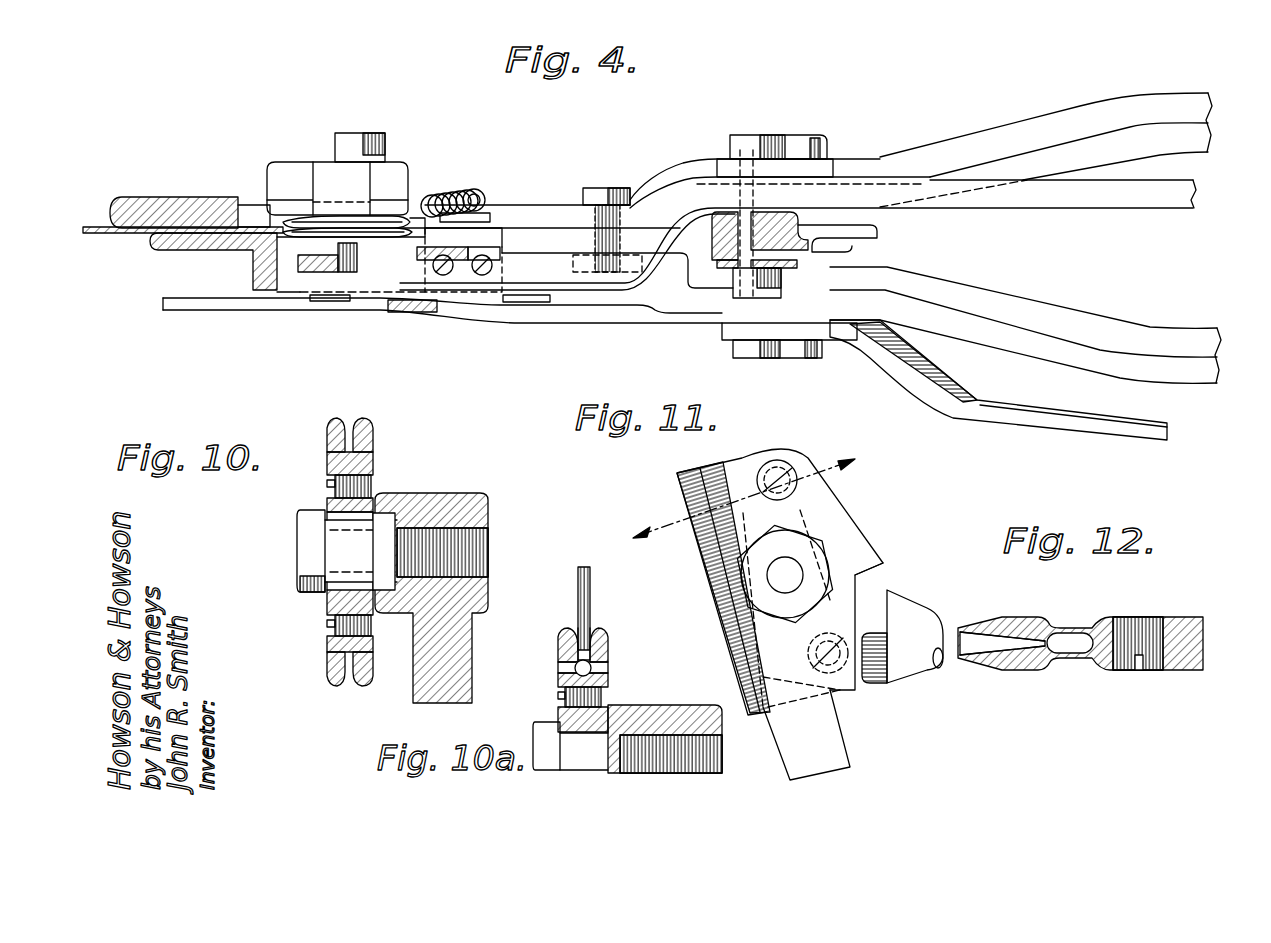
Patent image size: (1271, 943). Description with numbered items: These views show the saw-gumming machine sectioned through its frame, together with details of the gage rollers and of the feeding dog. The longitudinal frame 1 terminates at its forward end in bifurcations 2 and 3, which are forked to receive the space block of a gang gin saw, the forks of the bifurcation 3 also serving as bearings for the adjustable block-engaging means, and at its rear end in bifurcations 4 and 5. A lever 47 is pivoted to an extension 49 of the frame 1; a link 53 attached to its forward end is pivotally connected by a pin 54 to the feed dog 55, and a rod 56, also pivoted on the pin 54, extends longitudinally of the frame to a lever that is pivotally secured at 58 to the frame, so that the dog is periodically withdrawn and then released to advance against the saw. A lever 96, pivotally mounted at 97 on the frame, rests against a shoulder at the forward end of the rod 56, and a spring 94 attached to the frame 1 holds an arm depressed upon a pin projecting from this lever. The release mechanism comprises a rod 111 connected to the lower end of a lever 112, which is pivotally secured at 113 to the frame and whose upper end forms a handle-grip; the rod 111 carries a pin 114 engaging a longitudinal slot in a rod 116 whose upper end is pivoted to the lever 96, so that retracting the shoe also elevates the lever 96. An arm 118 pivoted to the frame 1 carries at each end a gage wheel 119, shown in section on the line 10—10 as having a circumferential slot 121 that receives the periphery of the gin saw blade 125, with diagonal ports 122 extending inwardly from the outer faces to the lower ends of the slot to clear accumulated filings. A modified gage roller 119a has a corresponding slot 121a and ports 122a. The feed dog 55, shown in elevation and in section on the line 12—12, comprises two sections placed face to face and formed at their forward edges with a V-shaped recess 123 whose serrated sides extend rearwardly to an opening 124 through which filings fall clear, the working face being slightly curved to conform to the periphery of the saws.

In FIG. 4, the longitudinal frame 1 is at (545, 212).
In FIG. 4, the bifurcation 2 is at (170, 197).
In FIG. 4, the bifurcation 3 is at (213, 251).
In FIG. 4, the bifurcation 4 is at (1073, 106).
In FIG. 4, the bifurcation 5 is at (1077, 364).
In FIG. 4, the section line 10— 10 is at (343, 175).
In FIG. 11, the section line 12— 12 is at (743, 501).
In FIG. 4, the lever 47 is at (572, 282).
In FIG. 4, the frame extension 49 is at (858, 240).
In FIG. 4, the link 53 is at (346, 264).
In FIG. 11, the link 53 is at (848, 742).
In FIG. 11, the pin 54 is at (775, 583).
In FIG. 11, the feed dog 55 is at (773, 452).
In FIG. 12, the feed dog 55 is at (1204, 660).
In FIG. 11, the rod 56 is at (934, 671).
In FIG. 4, the pivot 58 is at (748, 243).
In FIG. 4, the spring 94 is at (474, 188).
In FIG. 4, the lever 96 is at (486, 251).
In FIG. 4, the pivot 97 is at (498, 226).
In FIG. 4, the rod 111 is at (340, 313).
In FIG. 4, the lever 112 is at (1028, 423).
In FIG. 4, the pivot 113 is at (791, 356).
In FIG. 4, the pin 114 is at (518, 302).
In FIG. 4, the rod 116 is at (459, 306).
In FIG. 4, the arm 118 is at (378, 168).
In FIG. 10, the arm 118 is at (450, 493).
In FIG. 4, the wheel 119 is at (396, 216).
In FIG. 10, the wheel 119 is at (373, 434).
In FIG. 10A, the split washer 119a is at (610, 641).
In FIG. 10, the circumferential slot 121 is at (349, 418).
In FIG. 10A, the slot 121a is at (581, 640).
In FIG. 10, the diagonal ports 122 is at (338, 452).
In FIG. 10A, the threaded bore 122a is at (566, 668).
In FIG. 12, the V-shaped recess 123 is at (974, 626).
In FIG. 12, the opening 124 is at (1068, 655).
In FIG. 4, the gin saw blade 125 is at (95, 234).
In FIG. 10A, the gin saw blade 125 is at (591, 572).